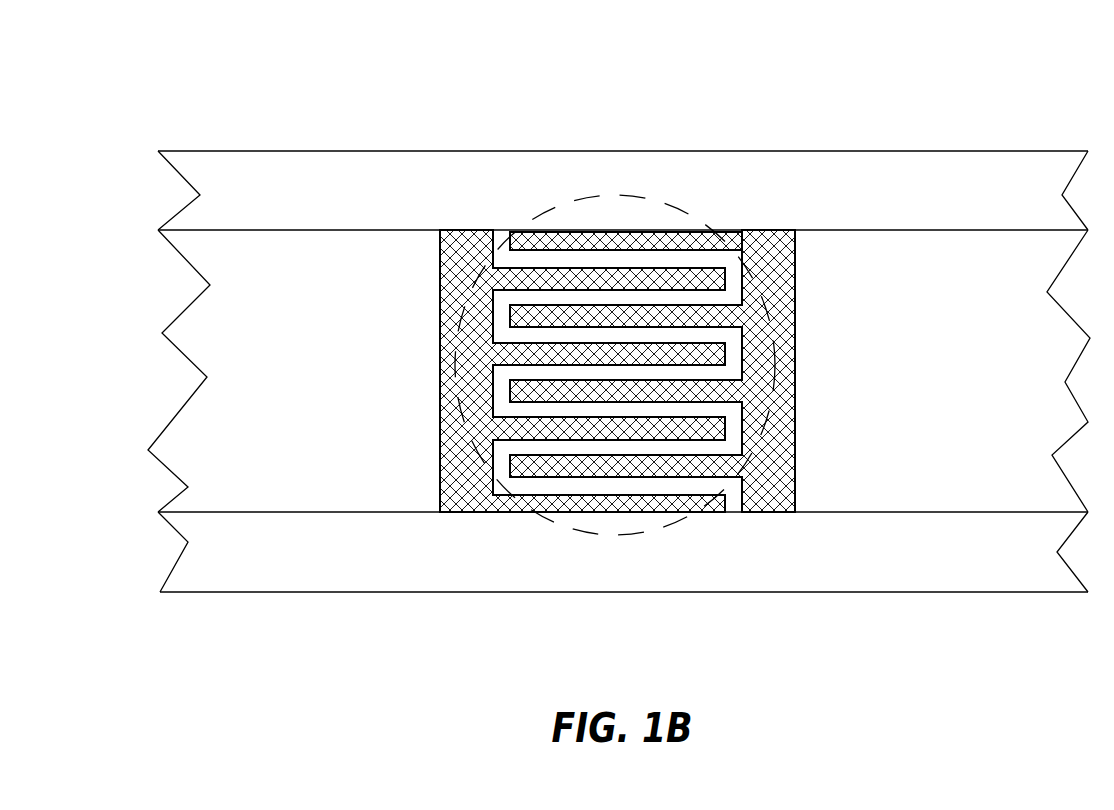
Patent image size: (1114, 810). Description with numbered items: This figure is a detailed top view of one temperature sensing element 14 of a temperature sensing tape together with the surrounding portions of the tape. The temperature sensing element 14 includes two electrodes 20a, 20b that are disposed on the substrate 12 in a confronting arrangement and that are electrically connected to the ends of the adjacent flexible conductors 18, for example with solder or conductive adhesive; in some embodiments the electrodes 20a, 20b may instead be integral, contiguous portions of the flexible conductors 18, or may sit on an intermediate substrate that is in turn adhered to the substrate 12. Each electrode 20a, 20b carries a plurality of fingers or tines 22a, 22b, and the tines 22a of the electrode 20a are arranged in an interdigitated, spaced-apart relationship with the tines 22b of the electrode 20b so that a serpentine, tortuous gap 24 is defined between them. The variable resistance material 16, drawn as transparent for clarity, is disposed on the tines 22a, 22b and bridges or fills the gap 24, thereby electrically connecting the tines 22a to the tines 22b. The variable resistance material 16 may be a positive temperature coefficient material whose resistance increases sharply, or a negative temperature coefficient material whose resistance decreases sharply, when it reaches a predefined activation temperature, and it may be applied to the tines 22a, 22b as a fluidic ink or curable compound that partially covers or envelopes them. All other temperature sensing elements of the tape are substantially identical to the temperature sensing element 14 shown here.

The substrate 12 is at (360, 178).
The temperature sensing element 14 is at (527, 205).
The variable resistance material 16 is at (700, 229).
The flexible conductors 18 is at (305, 283).
The electrode 20a is at (465, 495).
The electrode 20b is at (787, 512).
The tines 22a is at (558, 350).
The tines 22b is at (672, 313).
The gap 24 is at (625, 250).